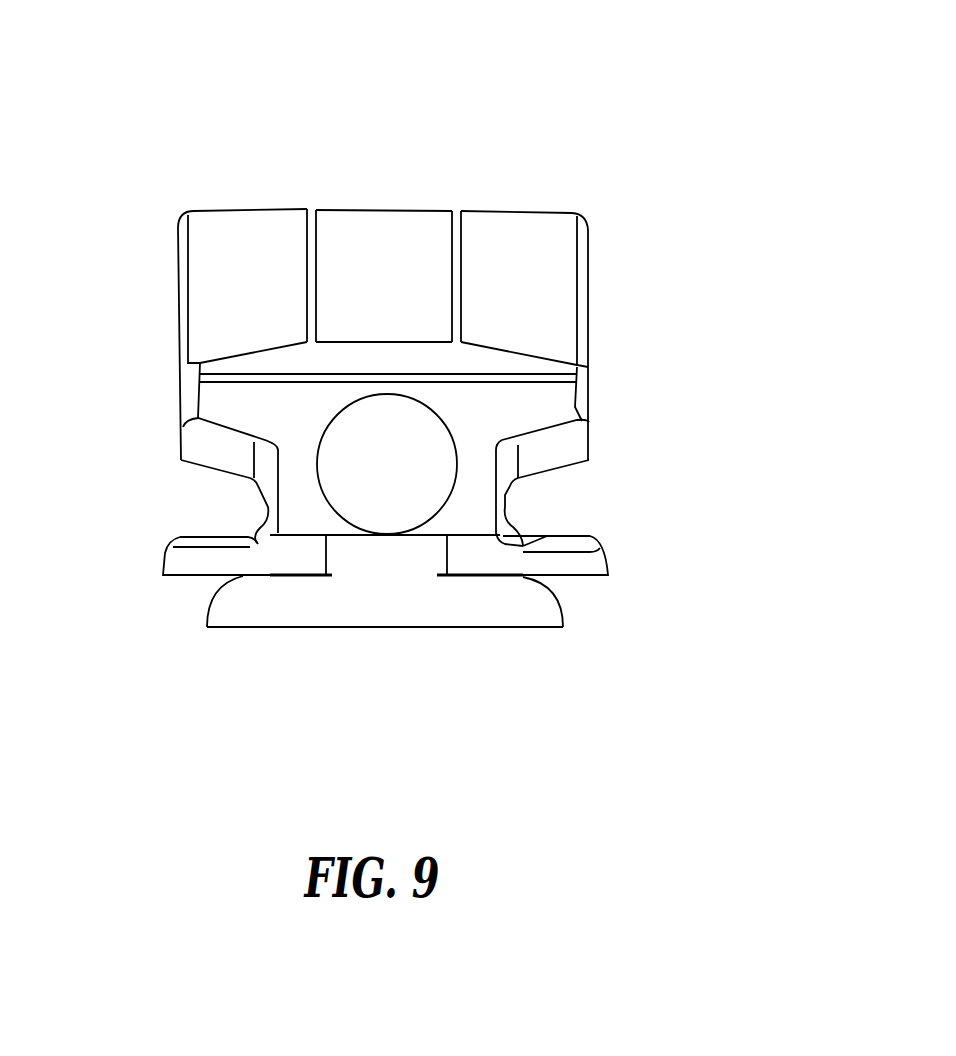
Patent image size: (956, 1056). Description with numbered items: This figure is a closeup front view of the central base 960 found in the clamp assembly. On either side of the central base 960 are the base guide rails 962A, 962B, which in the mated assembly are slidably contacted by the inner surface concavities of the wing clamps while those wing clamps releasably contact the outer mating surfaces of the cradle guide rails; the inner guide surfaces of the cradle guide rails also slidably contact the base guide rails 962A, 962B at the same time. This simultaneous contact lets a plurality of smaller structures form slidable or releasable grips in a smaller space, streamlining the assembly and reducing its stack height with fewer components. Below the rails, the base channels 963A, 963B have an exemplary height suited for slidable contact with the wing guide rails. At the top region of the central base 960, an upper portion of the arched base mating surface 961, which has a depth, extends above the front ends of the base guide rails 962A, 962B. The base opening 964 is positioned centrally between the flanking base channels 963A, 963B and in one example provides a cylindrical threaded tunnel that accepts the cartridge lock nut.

The central base 960 is at (700, 70).
The arched base mating surface 961 is at (382, 290).
The base guide rail 962A is at (186, 343).
The base guide rail 962B is at (580, 343).
The base channel 963A is at (270, 509).
The base channel 963B is at (505, 508).
The base opening 964 is at (390, 472).